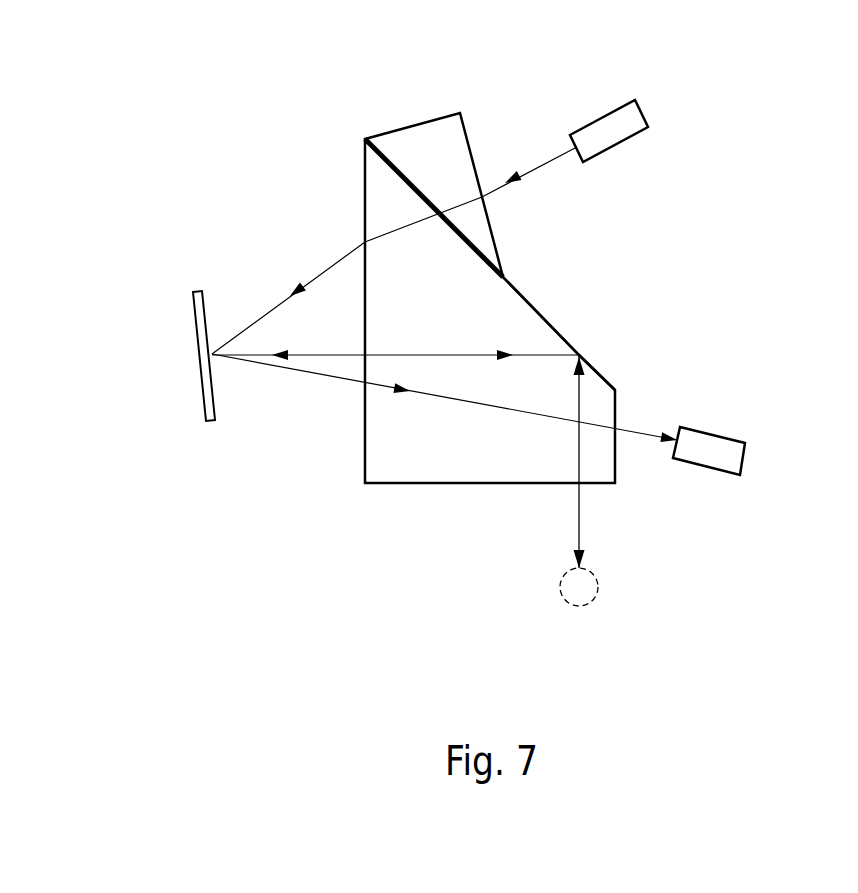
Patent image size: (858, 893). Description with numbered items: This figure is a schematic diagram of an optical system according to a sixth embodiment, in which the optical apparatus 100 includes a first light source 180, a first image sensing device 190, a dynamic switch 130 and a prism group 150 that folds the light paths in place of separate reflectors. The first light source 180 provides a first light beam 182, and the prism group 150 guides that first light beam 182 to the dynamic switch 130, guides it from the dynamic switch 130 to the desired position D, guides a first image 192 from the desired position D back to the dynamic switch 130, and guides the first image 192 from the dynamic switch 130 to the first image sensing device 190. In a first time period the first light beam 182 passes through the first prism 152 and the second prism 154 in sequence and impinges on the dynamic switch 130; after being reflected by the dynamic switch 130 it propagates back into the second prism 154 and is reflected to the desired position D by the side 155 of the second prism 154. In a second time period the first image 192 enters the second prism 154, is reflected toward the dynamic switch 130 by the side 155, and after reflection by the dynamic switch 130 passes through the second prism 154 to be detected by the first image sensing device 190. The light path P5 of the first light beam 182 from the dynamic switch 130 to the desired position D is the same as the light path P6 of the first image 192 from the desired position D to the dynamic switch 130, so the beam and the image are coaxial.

The optical apparatus 100 is at (80, 102).
The dynamic switch 130 is at (200, 328).
The prism group 150 is at (725, 237).
The first prism 152 is at (482, 232).
The second prism 154 is at (482, 293).
The side of the second prism 155 is at (592, 367).
The first light source 180 is at (648, 127).
The first light beam 182 is at (533, 178).
The first image sensing device 190 is at (738, 448).
The first image 192 is at (650, 432).
The light path of the first light beam P5 is at (672, 461).
The light path of the first image P6 is at (582, 510).
The desired position D is at (590, 590).